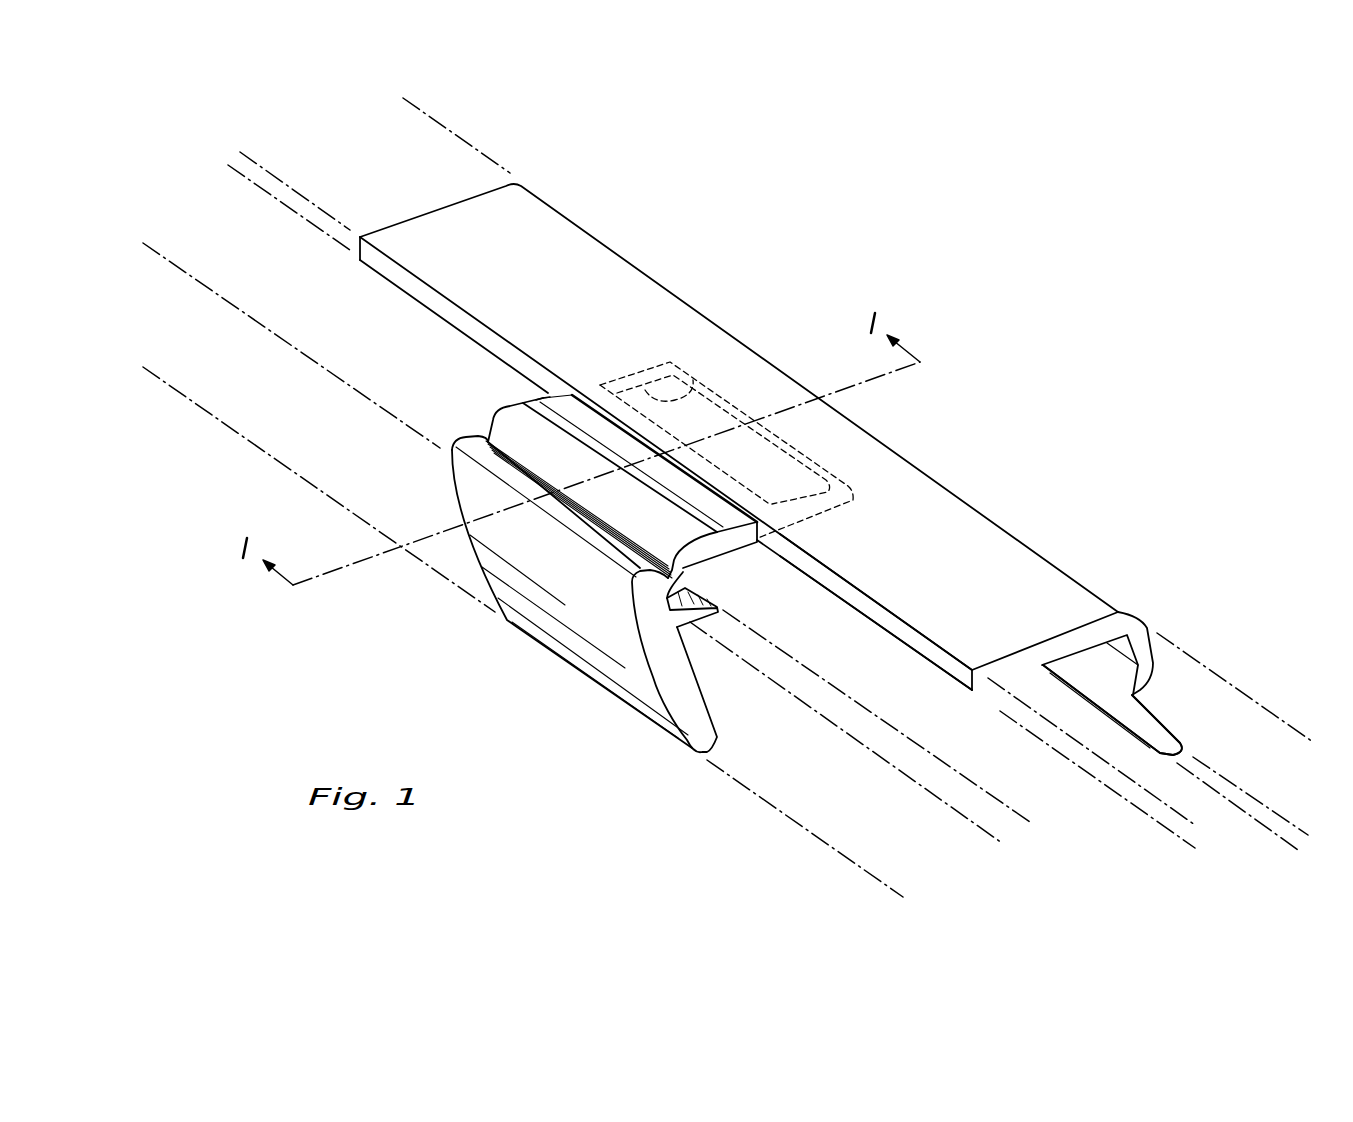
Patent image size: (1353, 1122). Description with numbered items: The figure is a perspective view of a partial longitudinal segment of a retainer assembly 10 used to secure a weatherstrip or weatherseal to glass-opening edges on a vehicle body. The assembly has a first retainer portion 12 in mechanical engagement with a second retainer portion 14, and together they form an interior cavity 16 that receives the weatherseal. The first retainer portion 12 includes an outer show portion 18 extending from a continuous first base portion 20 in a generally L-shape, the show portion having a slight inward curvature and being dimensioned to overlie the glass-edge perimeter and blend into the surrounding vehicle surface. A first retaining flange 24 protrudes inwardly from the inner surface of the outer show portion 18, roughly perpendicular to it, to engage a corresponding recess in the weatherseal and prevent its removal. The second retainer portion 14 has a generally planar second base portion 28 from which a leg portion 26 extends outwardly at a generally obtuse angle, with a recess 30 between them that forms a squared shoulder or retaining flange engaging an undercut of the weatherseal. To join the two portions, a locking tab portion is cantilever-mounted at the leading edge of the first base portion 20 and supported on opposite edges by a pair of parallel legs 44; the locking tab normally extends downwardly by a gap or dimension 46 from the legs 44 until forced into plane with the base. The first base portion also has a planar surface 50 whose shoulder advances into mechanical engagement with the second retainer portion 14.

The retainer assembly 10 is at (1080, 380).
The first retainer portion 12 is at (568, 552).
The second retainer portion 14 is at (893, 416).
The interior cavity 16 is at (809, 626).
The outer show portion 18 is at (597, 630).
The first base portion 20 is at (497, 419).
The first retaining flange 24 is at (717, 620).
The leg portion 26 is at (1153, 610).
The second base portion 28 is at (571, 268).
The recess 30 is at (1107, 682).
The pair of parallel legs 44 is at (640, 373).
The gap or dimension 46 is at (698, 400).
The planar surface 50 is at (544, 397).